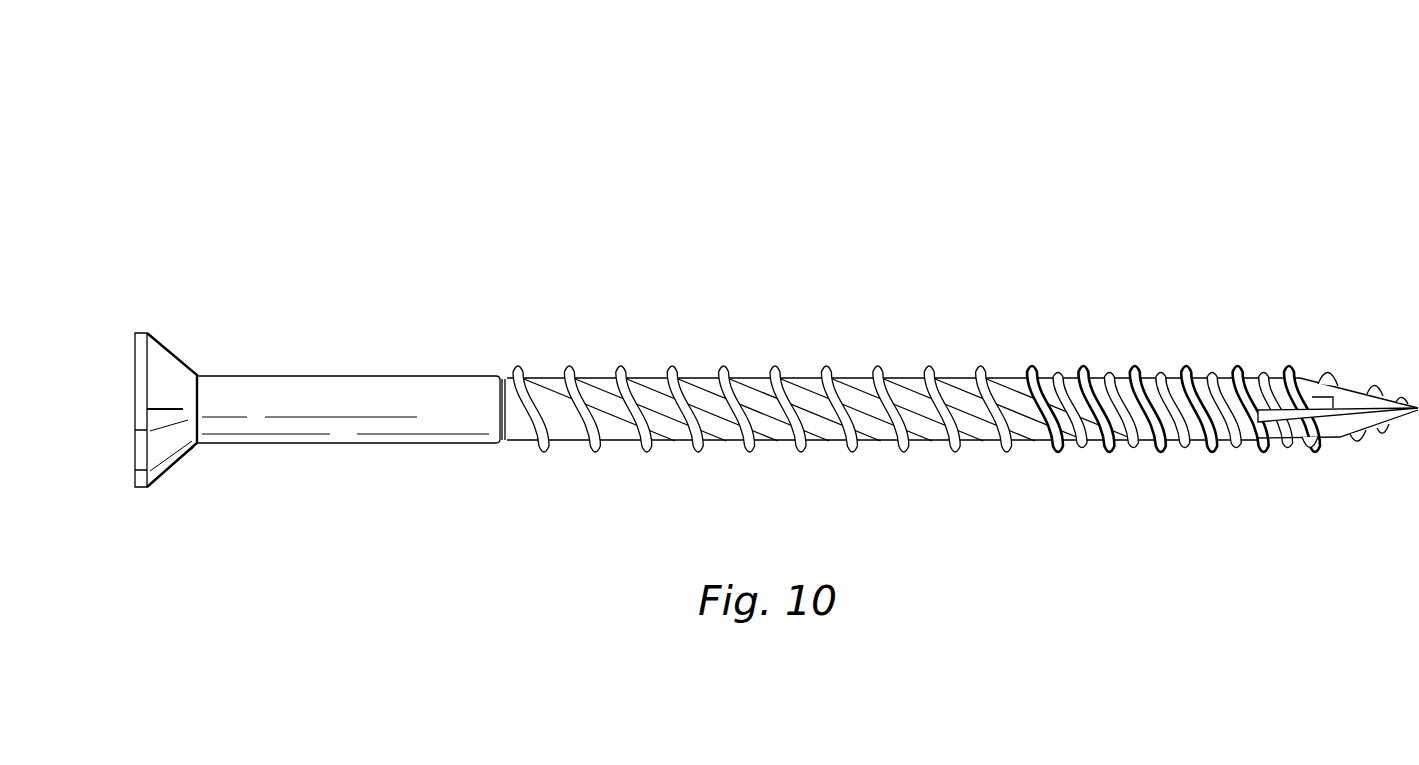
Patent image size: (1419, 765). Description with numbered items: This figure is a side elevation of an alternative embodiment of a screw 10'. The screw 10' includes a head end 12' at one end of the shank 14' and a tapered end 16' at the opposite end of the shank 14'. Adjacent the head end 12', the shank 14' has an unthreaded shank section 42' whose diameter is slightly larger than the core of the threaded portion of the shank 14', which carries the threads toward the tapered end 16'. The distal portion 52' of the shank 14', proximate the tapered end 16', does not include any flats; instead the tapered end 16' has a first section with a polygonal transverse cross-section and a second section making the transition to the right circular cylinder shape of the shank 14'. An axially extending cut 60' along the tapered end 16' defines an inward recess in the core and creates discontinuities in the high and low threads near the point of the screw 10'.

The screw 10' is at (776, 318).
The head end 12' is at (185, 285).
The shank 14' is at (761, 342).
The tapered end 16' is at (1338, 313).
The unthreaded shank section 42' is at (351, 343).
The distal portion of the shank 52' is at (1268, 459).
The axially extending cut 60' is at (1338, 451).